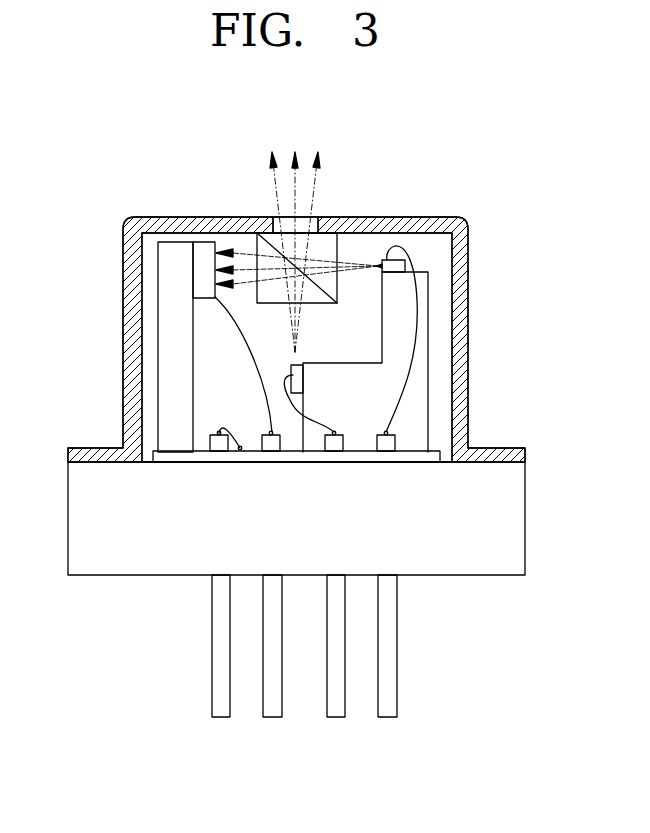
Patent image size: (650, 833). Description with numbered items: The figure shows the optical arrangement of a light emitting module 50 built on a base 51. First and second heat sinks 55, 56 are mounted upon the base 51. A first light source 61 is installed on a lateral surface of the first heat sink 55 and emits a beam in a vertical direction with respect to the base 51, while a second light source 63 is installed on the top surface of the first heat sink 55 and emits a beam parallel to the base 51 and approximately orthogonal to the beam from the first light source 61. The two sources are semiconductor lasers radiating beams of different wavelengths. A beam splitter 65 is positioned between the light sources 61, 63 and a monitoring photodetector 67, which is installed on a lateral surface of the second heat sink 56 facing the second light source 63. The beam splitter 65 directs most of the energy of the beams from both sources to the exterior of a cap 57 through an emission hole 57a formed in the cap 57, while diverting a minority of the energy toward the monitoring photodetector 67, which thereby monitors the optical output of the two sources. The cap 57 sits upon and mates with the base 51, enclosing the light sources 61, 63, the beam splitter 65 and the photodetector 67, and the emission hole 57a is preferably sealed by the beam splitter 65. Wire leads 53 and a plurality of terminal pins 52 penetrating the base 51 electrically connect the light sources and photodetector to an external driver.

The light emitting module 50 is at (476, 191).
The base 51 is at (512, 505).
The terminal pins 52 is at (390, 628).
The wire leads 53 is at (395, 405).
The first heat sink 55 is at (422, 347).
The second heat sink 56 is at (165, 353).
The cap 57 is at (468, 263).
The emission hole 57a is at (321, 228).
The first light source 61 is at (300, 378).
The second light source 63 is at (389, 260).
The beam splitter 65 is at (318, 250).
The monitoring photodetector 67 is at (204, 252).